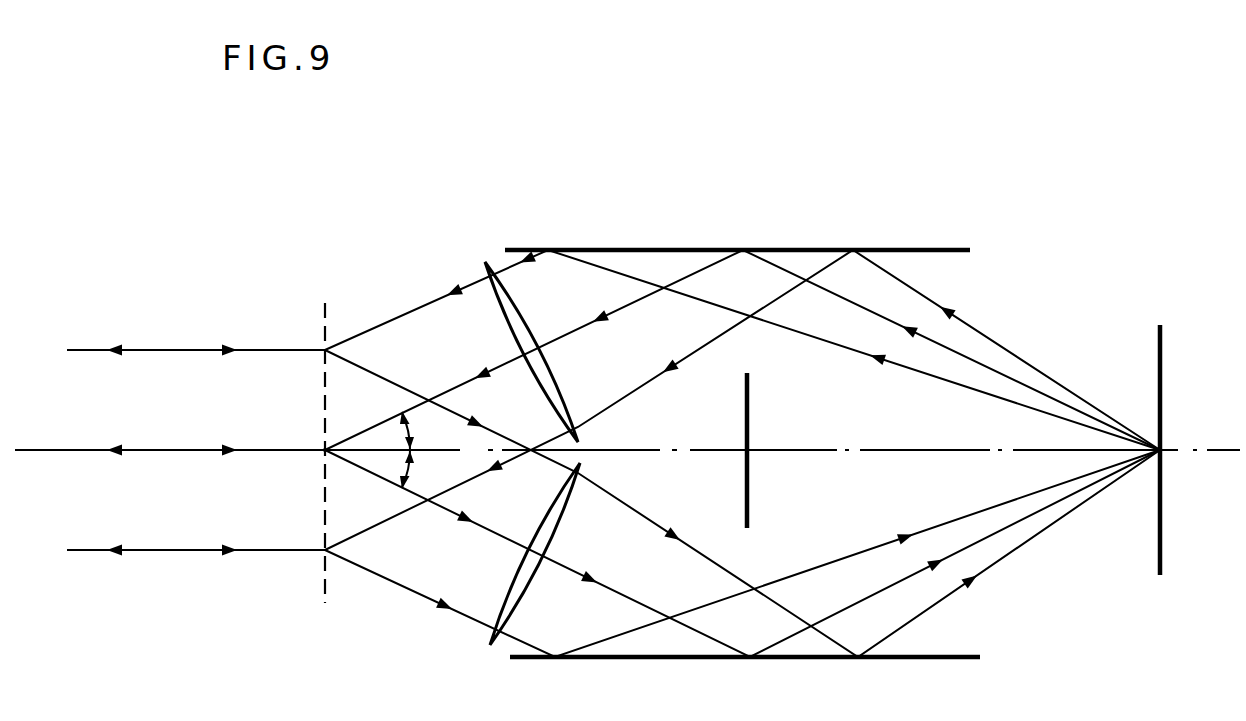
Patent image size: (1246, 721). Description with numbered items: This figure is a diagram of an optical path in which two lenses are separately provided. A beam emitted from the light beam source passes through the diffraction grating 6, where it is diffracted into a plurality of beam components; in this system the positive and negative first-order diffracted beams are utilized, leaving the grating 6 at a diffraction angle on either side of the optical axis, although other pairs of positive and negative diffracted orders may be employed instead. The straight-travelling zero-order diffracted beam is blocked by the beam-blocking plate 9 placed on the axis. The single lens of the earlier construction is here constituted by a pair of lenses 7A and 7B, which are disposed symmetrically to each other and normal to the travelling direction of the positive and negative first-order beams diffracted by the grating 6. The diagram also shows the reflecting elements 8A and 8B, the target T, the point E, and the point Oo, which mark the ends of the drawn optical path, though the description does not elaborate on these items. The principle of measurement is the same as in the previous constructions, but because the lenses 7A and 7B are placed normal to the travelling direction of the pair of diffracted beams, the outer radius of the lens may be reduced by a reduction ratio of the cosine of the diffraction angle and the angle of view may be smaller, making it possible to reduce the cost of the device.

The diffraction grating 6 is at (320, 312).
The lens 7A is at (500, 303).
The lens 7B is at (492, 600).
The upper mirror 8A is at (643, 249).
The lower mirror 8B is at (668, 659).
The beam-blocking plate 9 is at (749, 390).
The target T is at (1163, 358).
The eye point E is at (310, 435).
The object point on target Oo is at (1182, 439).